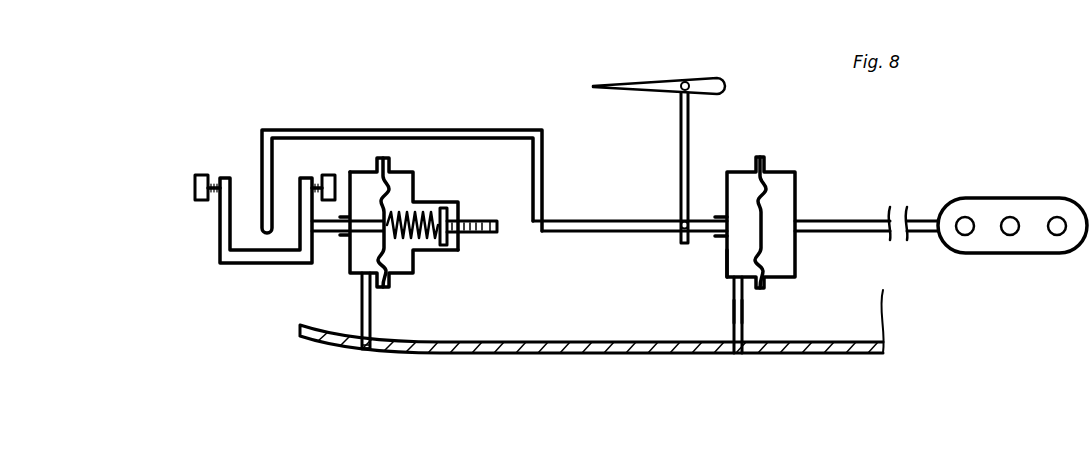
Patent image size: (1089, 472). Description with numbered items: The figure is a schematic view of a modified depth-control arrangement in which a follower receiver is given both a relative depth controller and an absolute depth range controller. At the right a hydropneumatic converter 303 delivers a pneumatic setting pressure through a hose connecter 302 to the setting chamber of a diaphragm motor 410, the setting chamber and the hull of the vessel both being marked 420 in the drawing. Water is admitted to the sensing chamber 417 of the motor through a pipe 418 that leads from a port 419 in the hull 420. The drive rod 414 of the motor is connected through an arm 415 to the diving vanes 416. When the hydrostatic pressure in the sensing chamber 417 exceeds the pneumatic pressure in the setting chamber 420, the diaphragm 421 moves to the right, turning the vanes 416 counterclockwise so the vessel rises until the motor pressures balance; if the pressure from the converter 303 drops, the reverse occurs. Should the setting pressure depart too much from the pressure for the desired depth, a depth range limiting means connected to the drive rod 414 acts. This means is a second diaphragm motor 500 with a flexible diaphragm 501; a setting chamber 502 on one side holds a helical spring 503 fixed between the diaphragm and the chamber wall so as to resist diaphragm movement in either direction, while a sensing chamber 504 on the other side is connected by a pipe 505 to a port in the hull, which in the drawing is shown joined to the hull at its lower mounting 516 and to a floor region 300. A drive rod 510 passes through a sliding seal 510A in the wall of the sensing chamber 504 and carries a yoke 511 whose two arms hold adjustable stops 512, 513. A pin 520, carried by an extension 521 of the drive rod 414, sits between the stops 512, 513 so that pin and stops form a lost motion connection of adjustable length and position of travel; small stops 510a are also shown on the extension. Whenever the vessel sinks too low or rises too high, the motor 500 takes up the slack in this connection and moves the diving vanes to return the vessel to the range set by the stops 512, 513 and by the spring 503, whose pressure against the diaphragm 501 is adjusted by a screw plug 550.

The floor panel 300 is at (510, 354).
The hose connecter 302 is at (830, 234).
The hydropneumatic converter 303 is at (1000, 254).
The diaphragm motor 410 is at (778, 266).
The drive rod 414 is at (700, 223).
The arm 415 is at (692, 119).
The diving vanes 416 is at (711, 78).
The sensing chamber 417 is at (738, 258).
The pipe 418 is at (735, 323).
The port 419 is at (738, 356).
The hull 420 is at (786, 197).
The diaphragm 421 is at (773, 198).
The diaphragm motor 500 is at (442, 205).
The flexible diaphragm 501 is at (394, 190).
The setting chamber 502 is at (402, 186).
The helical spring 503 is at (420, 257).
The sensing chamber 504 is at (363, 255).
The pipe 505 is at (371, 322).
The drive rod 510 is at (332, 236).
The sliding seal 510A is at (347, 234).
The stops 510a is at (716, 240).
The yoke 511 is at (221, 219).
The adjustable stop 512 is at (196, 186).
The adjustable stop 513 is at (331, 172).
The bracket base 516 is at (363, 348).
The pin 520 is at (260, 192).
The extension 521 is at (573, 222).
The screw plug 550 is at (492, 234).